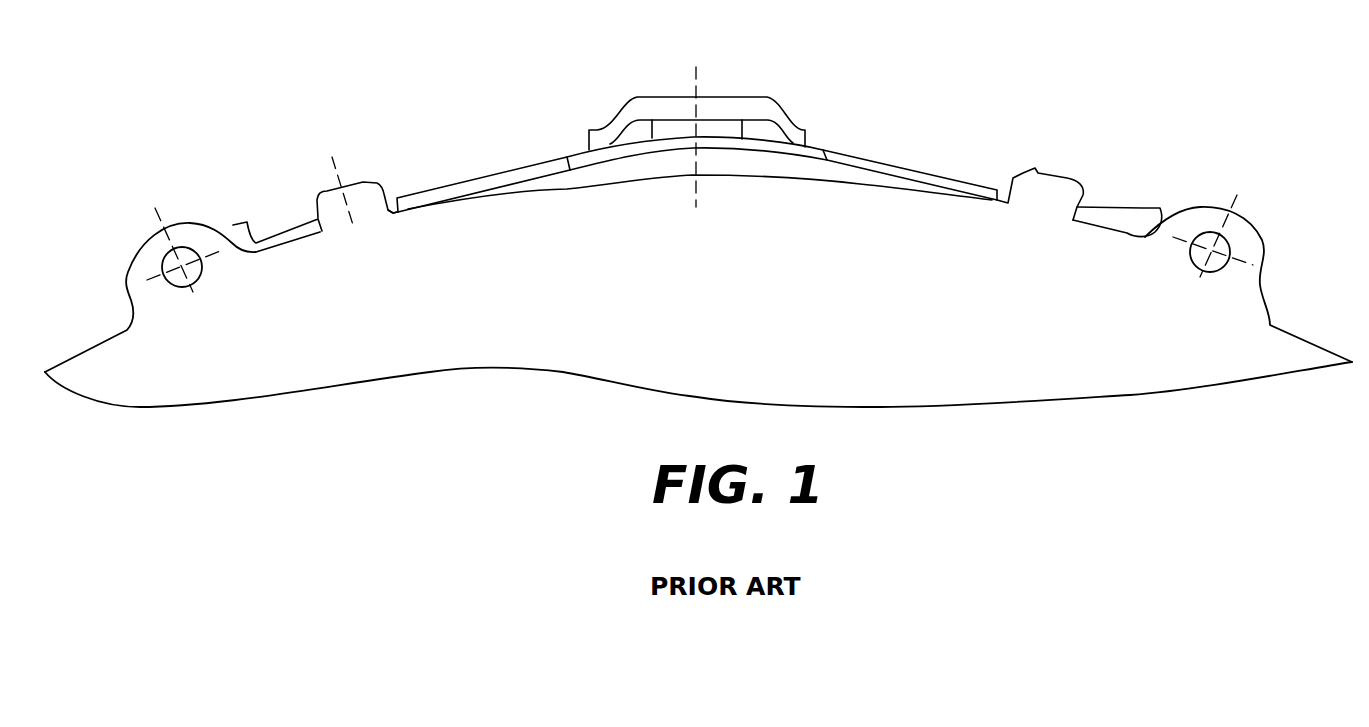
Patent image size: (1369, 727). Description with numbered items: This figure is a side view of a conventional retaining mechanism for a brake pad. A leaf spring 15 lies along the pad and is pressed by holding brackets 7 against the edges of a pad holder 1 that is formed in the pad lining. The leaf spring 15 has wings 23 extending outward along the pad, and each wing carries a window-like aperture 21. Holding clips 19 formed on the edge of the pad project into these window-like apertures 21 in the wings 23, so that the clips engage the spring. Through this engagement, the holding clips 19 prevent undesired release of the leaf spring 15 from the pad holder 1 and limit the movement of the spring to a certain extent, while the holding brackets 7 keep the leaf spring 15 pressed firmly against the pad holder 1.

The pad holder 1 is at (1265, 331).
The holding bracket 7 is at (747, 108).
The leaf spring 15 is at (688, 143).
The holding clip 19 is at (331, 207).
The window-like aperture 21 is at (388, 192).
The wing 23 is at (410, 205).